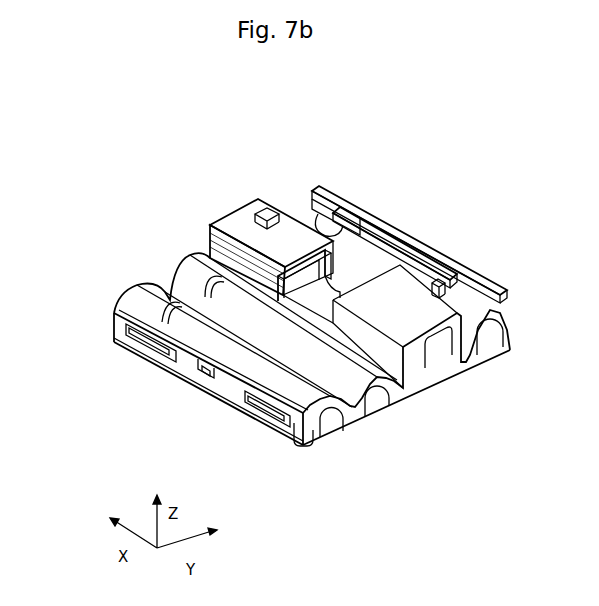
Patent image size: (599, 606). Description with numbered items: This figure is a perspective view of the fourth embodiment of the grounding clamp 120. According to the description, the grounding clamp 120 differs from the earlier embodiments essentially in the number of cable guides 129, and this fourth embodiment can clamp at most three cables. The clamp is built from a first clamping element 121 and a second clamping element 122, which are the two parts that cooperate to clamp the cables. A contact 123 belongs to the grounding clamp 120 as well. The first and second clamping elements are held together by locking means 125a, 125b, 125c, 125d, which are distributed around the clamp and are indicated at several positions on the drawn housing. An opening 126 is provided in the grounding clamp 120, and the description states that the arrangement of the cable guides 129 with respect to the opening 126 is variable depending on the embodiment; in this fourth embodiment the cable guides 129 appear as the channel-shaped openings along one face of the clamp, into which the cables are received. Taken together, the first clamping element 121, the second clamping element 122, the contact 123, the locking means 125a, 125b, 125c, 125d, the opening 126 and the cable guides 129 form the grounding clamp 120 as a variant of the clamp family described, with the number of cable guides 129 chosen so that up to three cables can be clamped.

The grounding clamp 120 is at (330, 102).
The first clamping element 121 is at (232, 220).
The second clamping element 122 is at (228, 388).
The contact 123 is at (193, 322).
The locking means 125a is at (428, 242).
The locking means 125b is at (125, 340).
The locking means 125c is at (267, 220).
The locking means 125d is at (197, 370).
The opening 126 is at (312, 293).
The cable guide 129 is at (335, 415).